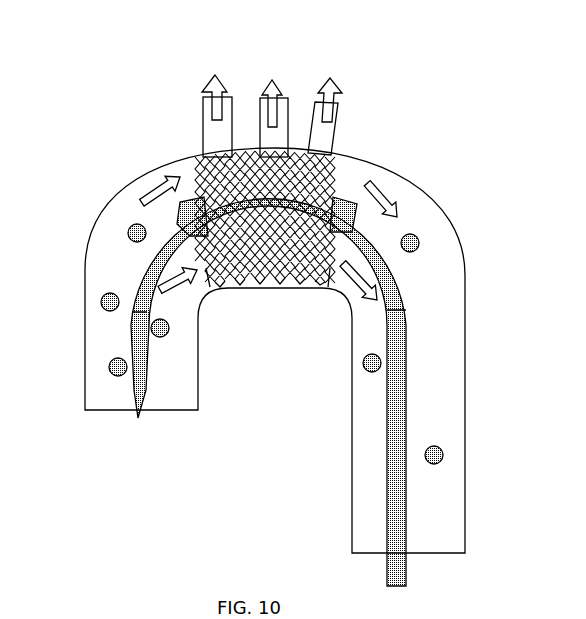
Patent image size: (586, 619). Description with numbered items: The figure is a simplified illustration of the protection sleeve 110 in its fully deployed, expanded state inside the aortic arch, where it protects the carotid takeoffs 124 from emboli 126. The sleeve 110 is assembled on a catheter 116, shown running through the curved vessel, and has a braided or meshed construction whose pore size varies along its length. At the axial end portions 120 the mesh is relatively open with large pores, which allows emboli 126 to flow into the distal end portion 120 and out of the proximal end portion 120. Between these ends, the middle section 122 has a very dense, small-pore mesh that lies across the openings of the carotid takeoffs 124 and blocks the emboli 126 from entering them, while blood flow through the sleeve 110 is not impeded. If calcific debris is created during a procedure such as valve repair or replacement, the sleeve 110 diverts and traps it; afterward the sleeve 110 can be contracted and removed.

The protection sleeve 110 is at (266, 266).
The catheter 116 is at (143, 350).
The axial end portions 120 is at (198, 183).
The middle section 122 is at (288, 157).
The carotid takeoffs 124 is at (213, 130).
The emboli 126 is at (110, 365).